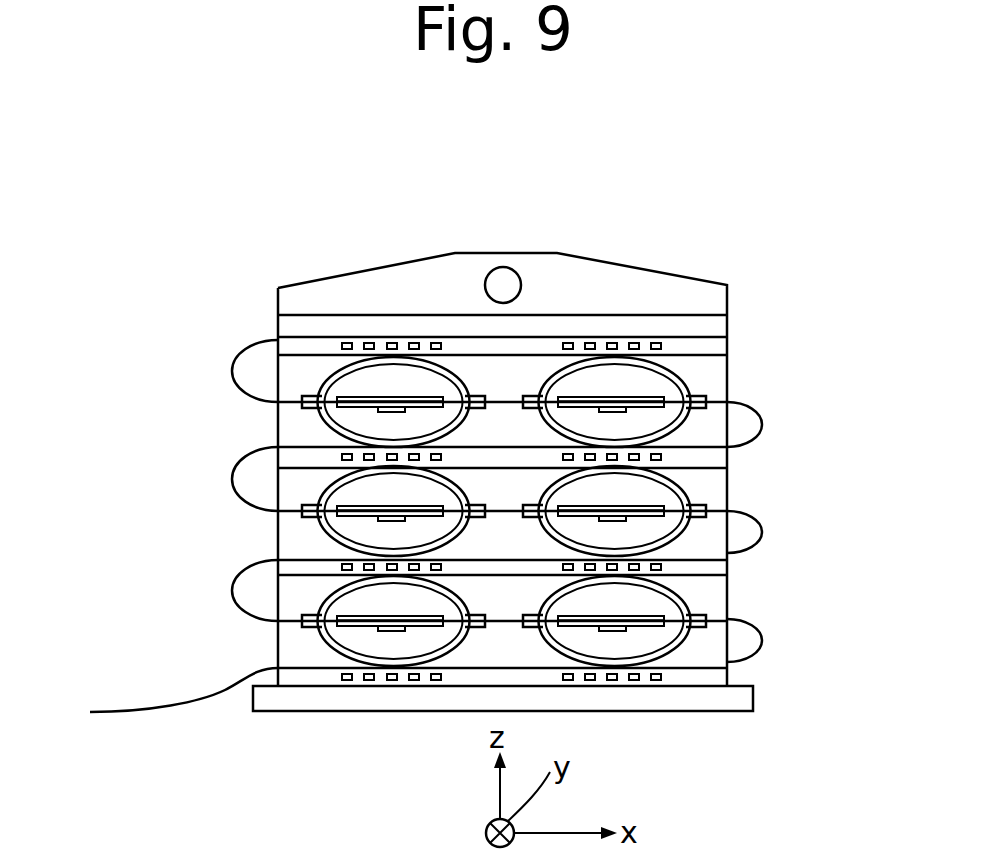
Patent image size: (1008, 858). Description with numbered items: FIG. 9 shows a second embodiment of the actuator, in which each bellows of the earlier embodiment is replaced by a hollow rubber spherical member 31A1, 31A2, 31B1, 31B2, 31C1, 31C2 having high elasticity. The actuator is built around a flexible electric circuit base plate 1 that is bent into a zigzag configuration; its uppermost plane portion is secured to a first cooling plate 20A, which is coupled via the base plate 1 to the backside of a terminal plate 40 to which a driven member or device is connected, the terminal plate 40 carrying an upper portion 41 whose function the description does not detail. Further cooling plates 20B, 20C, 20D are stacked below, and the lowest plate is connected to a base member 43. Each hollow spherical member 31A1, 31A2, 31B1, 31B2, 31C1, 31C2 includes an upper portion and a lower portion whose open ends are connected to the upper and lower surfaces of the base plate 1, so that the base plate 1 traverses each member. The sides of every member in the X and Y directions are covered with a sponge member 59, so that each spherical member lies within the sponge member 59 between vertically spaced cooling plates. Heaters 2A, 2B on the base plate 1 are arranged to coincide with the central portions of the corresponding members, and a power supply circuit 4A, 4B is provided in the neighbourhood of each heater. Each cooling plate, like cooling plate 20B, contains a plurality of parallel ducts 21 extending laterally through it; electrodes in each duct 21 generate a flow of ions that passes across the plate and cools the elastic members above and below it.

The flexible electric circuit base plate 1 is at (243, 335).
The heater 2A is at (410, 396).
The heater 2B is at (655, 393).
The power supply circuit 4A is at (337, 400).
The power supply circuit 4B is at (592, 395).
The first cooling plate 20A is at (713, 345).
The cooling plate 20B is at (718, 453).
The cooling plate 20C is at (718, 562).
The cooling plate 20D is at (717, 673).
The duct 21 is at (663, 455).
The hollow rubber spherical member 31A1 is at (330, 426).
The hollow rubber spherical member 31A2 is at (688, 380).
The hollow rubber spherical member 31B1 is at (322, 528).
The hollow rubber spherical member 31B2 is at (700, 482).
The hollow rubber spherical member 31C1 is at (320, 638).
The hollow rubber spherical member 31C2 is at (683, 597).
The terminal plate 40 is at (713, 323).
The hanger 41 is at (677, 276).
The base member 43 is at (740, 700).
The sponge member 59 is at (513, 372).